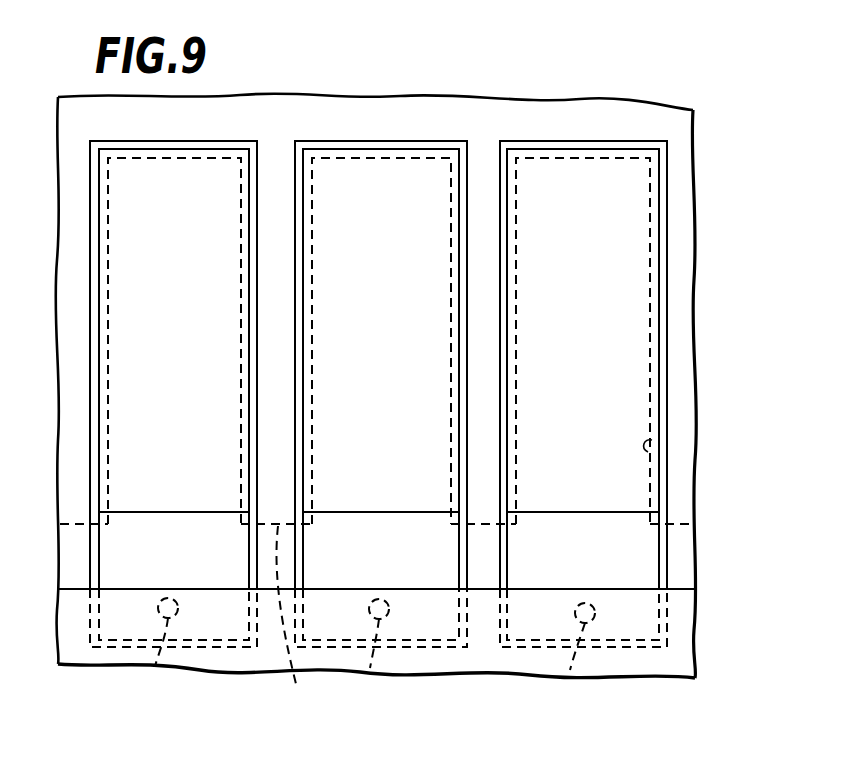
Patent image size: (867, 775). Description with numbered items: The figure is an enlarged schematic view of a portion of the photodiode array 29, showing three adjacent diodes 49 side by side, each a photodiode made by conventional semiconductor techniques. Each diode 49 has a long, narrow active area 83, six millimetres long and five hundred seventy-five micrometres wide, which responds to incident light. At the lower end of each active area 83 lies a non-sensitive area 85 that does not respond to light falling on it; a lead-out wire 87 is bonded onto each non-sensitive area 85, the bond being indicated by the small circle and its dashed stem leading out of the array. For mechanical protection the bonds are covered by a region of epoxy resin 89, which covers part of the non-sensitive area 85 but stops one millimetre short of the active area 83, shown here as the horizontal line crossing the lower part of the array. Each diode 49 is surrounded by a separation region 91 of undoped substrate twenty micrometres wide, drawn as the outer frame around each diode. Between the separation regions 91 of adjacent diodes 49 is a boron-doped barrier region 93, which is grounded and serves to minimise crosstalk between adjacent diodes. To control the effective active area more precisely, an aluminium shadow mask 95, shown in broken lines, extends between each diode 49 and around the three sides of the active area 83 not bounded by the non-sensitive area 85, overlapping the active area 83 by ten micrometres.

The photodiode array 29 is at (715, 527).
The diode 49 is at (382, 340).
The active area 83 is at (132, 251).
The non-sensitive area 85 is at (117, 557).
The lead-out wire 87 is at (158, 668).
The region of epoxy resin 89 is at (637, 590).
The separation region 91 is at (94, 340).
The barrier region 93 is at (272, 410).
The shadow mask 95 is at (652, 440).